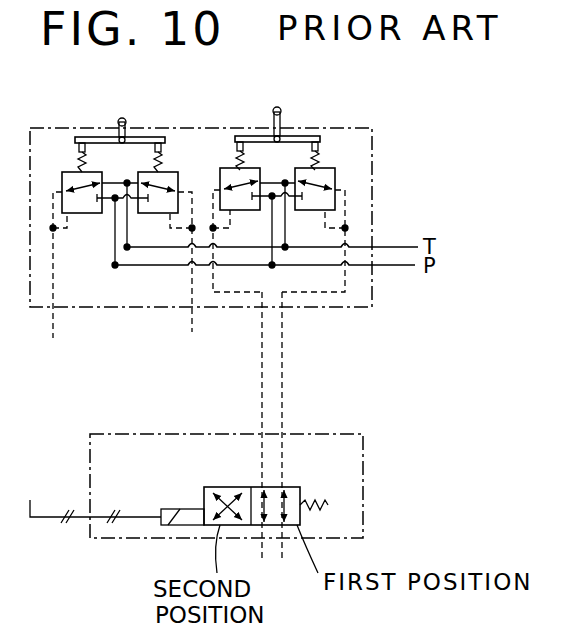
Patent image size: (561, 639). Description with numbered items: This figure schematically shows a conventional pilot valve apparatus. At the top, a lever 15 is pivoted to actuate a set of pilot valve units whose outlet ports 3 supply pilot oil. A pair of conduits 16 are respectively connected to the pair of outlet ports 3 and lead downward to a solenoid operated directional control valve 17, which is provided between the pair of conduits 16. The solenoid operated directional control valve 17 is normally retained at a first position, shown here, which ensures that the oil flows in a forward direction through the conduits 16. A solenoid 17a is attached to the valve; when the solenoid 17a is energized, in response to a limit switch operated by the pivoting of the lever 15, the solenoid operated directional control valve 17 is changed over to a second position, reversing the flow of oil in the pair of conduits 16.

The lever 15 is at (124, 118).
The outlet port 3 is at (222, 187).
The conduit 16 is at (262, 400).
The solenoid operated directional control valve 17 is at (290, 487).
The solenoid 17a is at (177, 508).